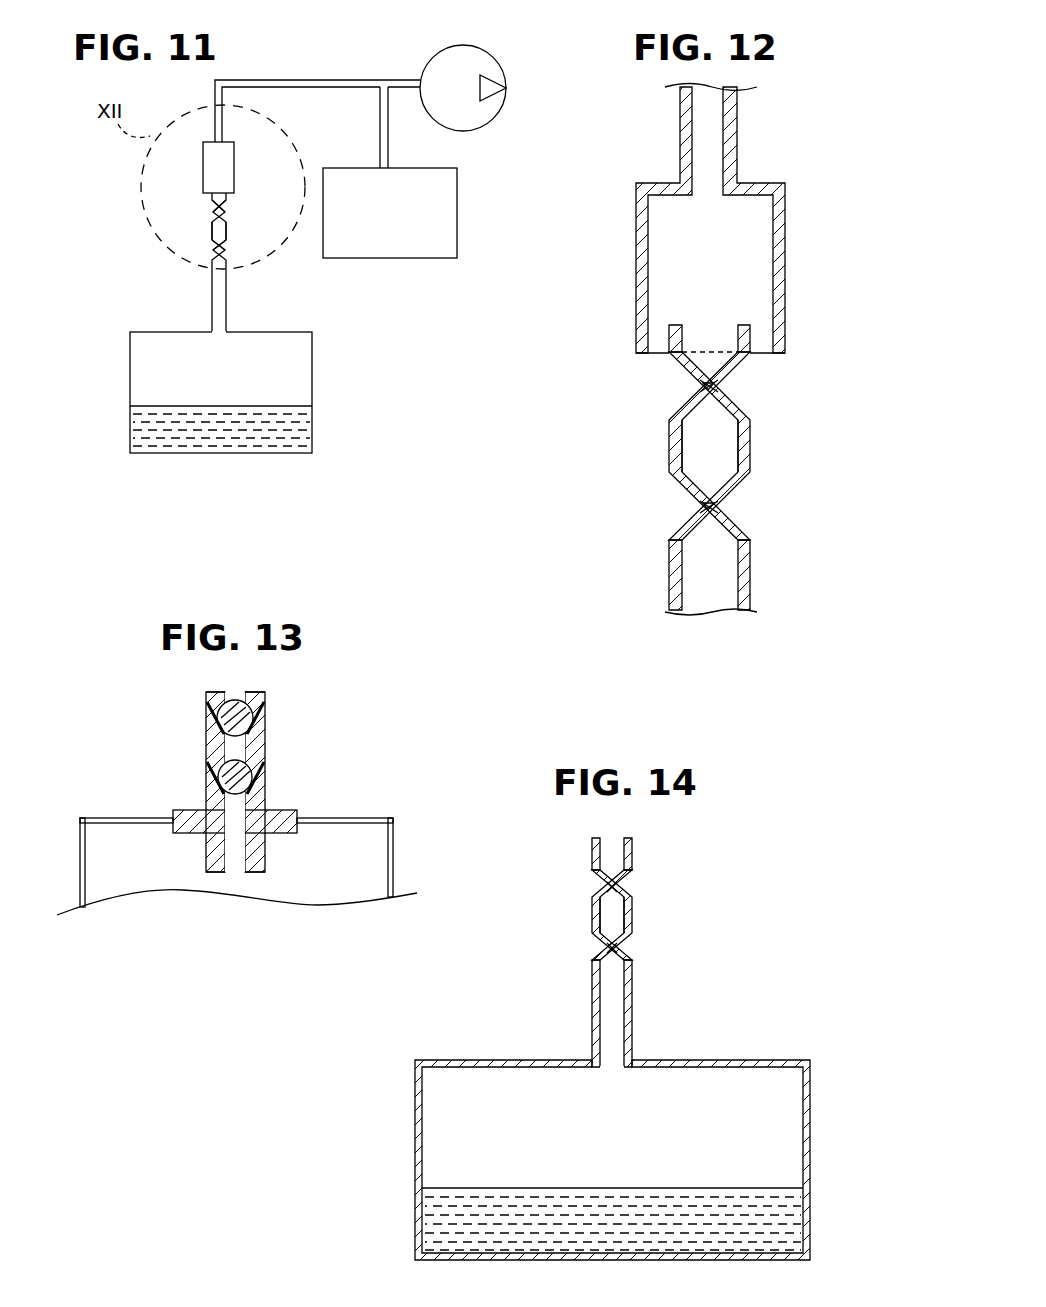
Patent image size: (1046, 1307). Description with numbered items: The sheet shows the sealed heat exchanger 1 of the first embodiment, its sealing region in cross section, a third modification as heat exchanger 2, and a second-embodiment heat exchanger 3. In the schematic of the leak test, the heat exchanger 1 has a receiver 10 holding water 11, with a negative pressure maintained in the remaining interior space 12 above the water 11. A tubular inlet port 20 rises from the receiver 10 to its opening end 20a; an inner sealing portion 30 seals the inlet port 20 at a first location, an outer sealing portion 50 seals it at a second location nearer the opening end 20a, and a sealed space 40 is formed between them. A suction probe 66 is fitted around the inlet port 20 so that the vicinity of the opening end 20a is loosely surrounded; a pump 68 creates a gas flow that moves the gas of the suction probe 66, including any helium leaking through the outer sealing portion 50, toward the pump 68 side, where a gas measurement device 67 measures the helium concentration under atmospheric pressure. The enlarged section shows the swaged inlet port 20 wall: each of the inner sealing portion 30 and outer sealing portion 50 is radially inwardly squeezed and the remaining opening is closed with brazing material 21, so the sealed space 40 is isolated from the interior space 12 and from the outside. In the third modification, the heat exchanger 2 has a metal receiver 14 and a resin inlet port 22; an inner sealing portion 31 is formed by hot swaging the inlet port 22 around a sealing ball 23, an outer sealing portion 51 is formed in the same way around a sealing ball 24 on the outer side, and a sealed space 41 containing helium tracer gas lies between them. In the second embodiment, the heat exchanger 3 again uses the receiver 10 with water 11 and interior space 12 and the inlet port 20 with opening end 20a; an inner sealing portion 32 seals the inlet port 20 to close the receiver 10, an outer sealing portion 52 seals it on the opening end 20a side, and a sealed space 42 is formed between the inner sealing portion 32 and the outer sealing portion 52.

In FIG. 11, the heat exchanger 1 is at (104, 304).
In FIG. 13, the heat exchanger 2 is at (386, 719).
In FIG. 14, the heat exchanger 3 is at (780, 888).
In FIG. 11, the receiver 10 is at (312, 394).
In FIG. 14, the receiver 10 is at (810, 1128).
In FIG. 11, the water 11 is at (300, 430).
In FIG. 14, the water 11 is at (782, 1218).
In FIG. 11, the remaining interior space 12 is at (300, 358).
In FIG. 14, the remaining interior space 12 is at (782, 1162).
In FIG. 13, the receiver 14 is at (393, 848).
In FIG. 11, the inlet port 20 is at (241, 303).
In FIG. 12, the inlet port 20 is at (768, 442).
In FIG. 14, the inlet port 20 is at (653, 934).
In FIG. 12, the opening end 20a is at (718, 325).
In FIG. 14, the opening end 20a is at (612, 838).
In FIG. 12, the brazing material 21 is at (702, 385).
In FIG. 13, the inlet port 22 is at (255, 751).
In FIG. 13, the sealing ball 23 is at (238, 778).
In FIG. 13, the sealing ball 24 is at (246, 714).
In FIG. 11, the inner sealing portion 30 is at (197, 254).
In FIG. 12, the inner sealing portion 30 is at (746, 513).
In FIG. 13, the inner sealing portion 31 is at (190, 783).
In FIG. 14, the inner sealing portion 32 is at (622, 950).
In FIG. 11, the sealed space 40 is at (212, 230).
In FIG. 12, the sealed space 40 is at (710, 445).
In FIG. 13, the sealed space 41 is at (232, 750).
In FIG. 14, the sealed space 42 is at (612, 917).
In FIG. 11, the outer sealing portion 50 is at (199, 214).
In FIG. 12, the outer sealing portion 50 is at (746, 391).
In FIG. 13, the outer sealing portion 51 is at (190, 718).
In FIG. 14, the outer sealing portion 52 is at (622, 888).
In FIG. 11, the suction probe 66 is at (221, 164).
In FIG. 12, the suction probe 66 is at (780, 228).
In FIG. 11, the gas measurement device 67 is at (445, 237).
In FIG. 11, the pump 68 is at (458, 56).